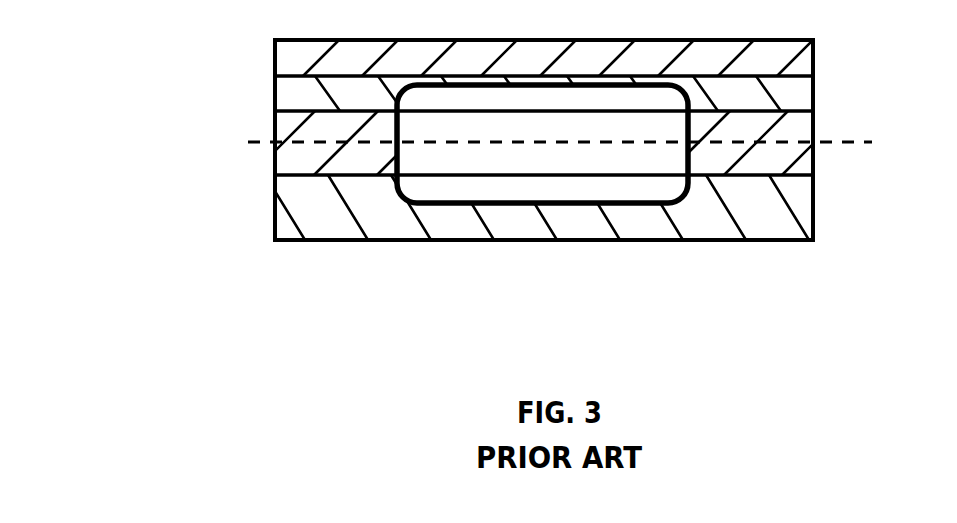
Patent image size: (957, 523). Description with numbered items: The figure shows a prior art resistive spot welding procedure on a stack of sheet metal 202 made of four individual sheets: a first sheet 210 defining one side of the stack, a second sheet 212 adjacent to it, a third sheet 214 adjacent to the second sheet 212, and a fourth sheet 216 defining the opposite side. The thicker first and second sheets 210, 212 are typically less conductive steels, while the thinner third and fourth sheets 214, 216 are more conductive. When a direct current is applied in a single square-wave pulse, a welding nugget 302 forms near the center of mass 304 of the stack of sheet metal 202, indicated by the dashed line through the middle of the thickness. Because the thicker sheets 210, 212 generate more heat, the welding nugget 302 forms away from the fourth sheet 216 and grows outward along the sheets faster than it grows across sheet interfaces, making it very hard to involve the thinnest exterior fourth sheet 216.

The stack of sheet metal 202 is at (208, 40).
The first sheet 210 is at (294, 207).
The second sheet 212 is at (293, 147).
The third sheet 214 is at (291, 91).
The fourth sheet 216 is at (291, 55).
The welding nugget 302 is at (448, 205).
The center of mass 304 is at (840, 143).